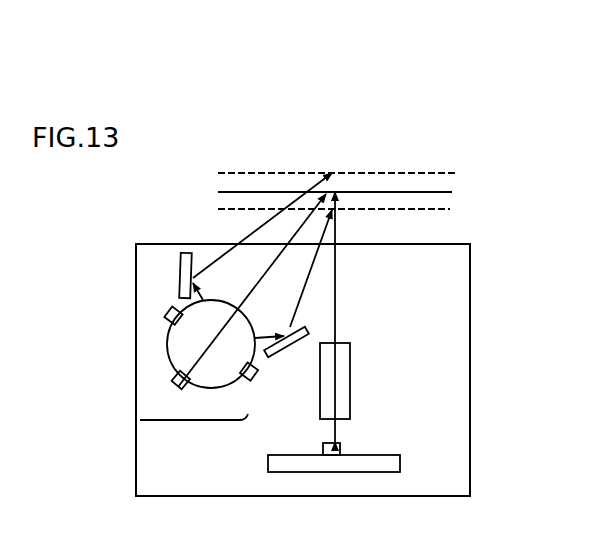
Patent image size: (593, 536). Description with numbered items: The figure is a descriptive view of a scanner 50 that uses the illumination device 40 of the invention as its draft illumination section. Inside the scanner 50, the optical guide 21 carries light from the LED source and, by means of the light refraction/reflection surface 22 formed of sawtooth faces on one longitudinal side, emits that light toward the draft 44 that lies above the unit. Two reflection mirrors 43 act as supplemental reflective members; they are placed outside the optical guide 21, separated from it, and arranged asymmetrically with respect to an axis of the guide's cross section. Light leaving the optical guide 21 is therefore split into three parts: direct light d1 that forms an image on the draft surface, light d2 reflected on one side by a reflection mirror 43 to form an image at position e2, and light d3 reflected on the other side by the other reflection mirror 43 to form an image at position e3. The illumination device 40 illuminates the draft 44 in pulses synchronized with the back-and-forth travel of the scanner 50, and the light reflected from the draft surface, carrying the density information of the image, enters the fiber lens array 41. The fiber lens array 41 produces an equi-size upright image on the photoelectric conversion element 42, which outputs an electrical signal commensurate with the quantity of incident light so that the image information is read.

The optical guide 21 is at (167, 348).
The light refraction/reflection surface 22 is at (168, 379).
The illumination device 40 is at (192, 422).
The fiber lens array 41 is at (350, 388).
The photoelectric conversion element 42 is at (341, 449).
The reflection mirror 43 is at (287, 330).
The draft 44 is at (452, 192).
The scanner 50 is at (470, 471).
The measurement beam d1 is at (336, 243).
The light d2 is at (252, 232).
The light d3 is at (306, 280).
The image position e2 is at (455, 173).
The image position e3 is at (450, 209).